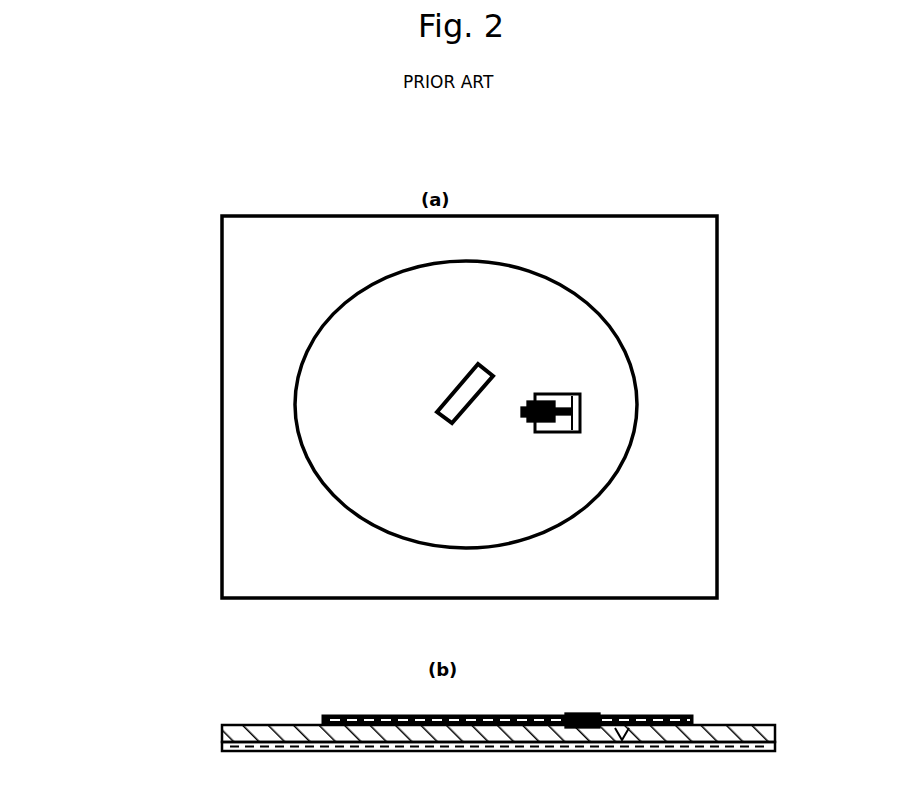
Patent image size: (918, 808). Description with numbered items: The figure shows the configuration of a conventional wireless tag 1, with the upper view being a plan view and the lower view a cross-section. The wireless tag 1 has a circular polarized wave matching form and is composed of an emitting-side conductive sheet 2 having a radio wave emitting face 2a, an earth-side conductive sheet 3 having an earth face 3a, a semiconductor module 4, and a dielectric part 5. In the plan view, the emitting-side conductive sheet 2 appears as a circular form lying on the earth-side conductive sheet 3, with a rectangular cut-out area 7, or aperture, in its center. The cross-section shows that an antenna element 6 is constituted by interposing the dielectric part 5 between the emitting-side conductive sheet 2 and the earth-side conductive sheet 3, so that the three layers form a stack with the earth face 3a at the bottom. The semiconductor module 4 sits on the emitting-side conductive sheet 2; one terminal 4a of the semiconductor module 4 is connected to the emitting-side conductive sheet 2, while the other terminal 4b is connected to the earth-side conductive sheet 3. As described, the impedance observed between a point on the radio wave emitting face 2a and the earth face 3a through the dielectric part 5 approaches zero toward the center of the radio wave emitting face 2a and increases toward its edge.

The wireless tag 1 is at (201, 389).
The emitting-side conductive sheet 2 is at (468, 542).
The radio wave emitting face 2a is at (386, 349).
The earth-side conductive sheet 3 is at (307, 585).
The earth face 3a is at (327, 752).
The semiconductor module 4 is at (548, 431).
The terminal 4a is at (526, 405).
The terminal 4b is at (574, 432).
The dielectric part 5 is at (226, 735).
The antenna element 6 is at (190, 707).
The rectangular cut-out area 7 is at (569, 394).